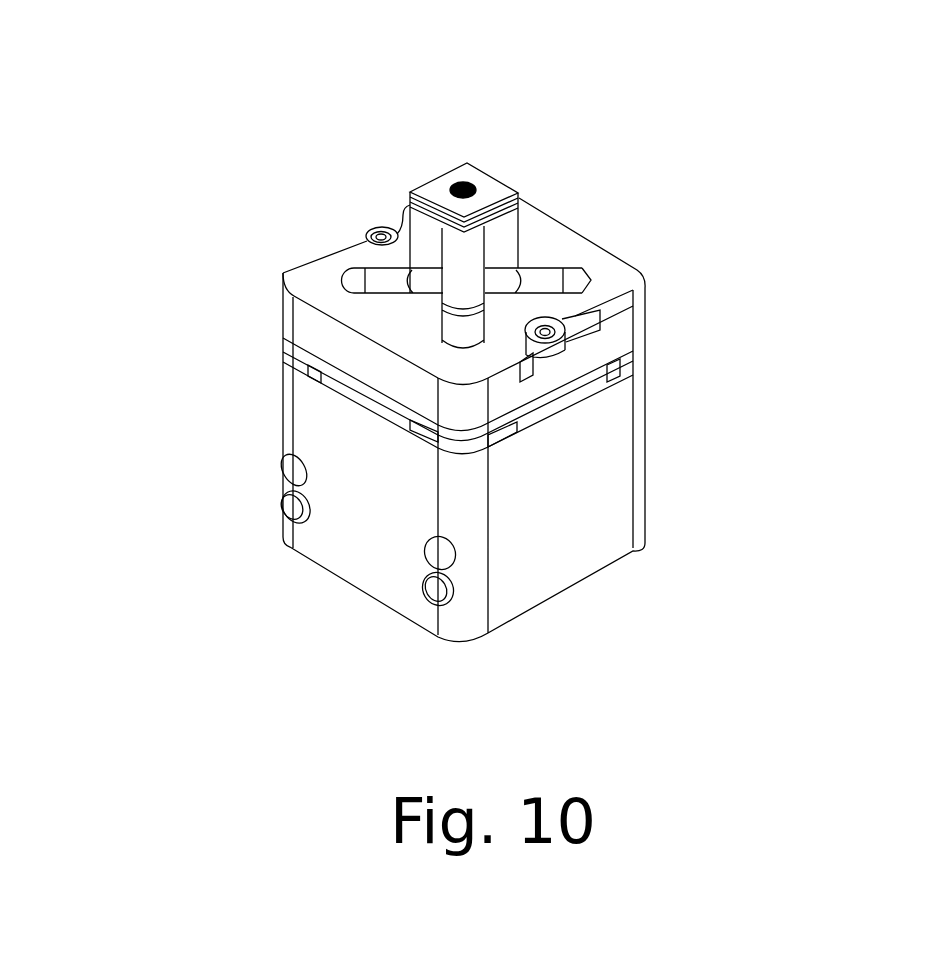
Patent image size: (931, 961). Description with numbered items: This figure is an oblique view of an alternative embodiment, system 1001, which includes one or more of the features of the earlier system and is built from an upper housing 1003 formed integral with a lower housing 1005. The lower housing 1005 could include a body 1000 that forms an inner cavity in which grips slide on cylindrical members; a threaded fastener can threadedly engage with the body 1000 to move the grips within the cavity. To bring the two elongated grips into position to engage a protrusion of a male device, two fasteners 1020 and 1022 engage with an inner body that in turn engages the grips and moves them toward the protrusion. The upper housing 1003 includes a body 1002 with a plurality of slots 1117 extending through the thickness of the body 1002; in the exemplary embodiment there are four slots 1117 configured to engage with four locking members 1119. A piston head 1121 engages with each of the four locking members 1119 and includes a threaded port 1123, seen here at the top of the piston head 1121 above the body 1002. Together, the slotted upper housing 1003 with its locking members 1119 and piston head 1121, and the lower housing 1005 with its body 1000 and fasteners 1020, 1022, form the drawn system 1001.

The system 1001 is at (190, 145).
The body 1000 is at (293, 410).
The body 1002 is at (629, 260).
The upper housing 1003 is at (216, 337).
The lower housing 1005 is at (262, 562).
The slots 1117 is at (583, 281).
The locking members 1119 is at (517, 232).
The piston head 1121 is at (487, 168).
The threaded port 1123 is at (463, 186).
The fastener 1022 is at (366, 232).
The fastener 1020 is at (558, 358).